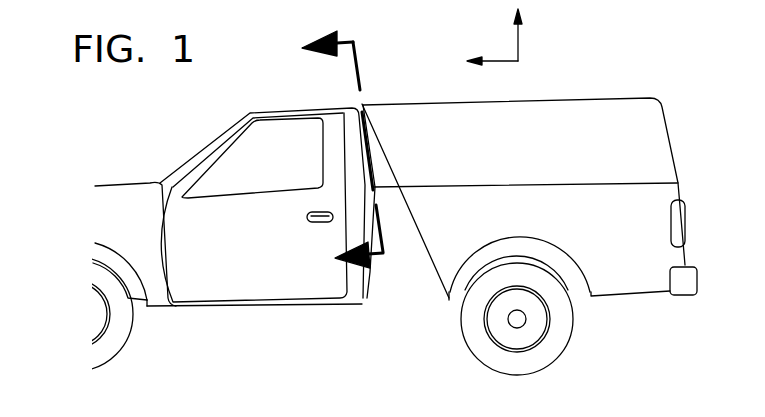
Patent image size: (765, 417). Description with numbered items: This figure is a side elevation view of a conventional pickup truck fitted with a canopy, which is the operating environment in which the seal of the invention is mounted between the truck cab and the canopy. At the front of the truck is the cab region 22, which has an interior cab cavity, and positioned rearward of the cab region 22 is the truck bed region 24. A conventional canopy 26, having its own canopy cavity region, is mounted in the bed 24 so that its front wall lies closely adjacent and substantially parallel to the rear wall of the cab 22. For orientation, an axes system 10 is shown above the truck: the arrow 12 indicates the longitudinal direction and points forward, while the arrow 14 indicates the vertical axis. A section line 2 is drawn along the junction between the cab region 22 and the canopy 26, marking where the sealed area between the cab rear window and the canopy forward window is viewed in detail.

The section line 2- 2 is at (334, 152).
The axes system 10 is at (528, 32).
The longitudinal direction arrow 12 is at (495, 61).
The vertical axes arrow 14 is at (522, 30).
The cab region 22 is at (240, 145).
The truck bed region 24 is at (618, 248).
The canopy 26 is at (553, 117).